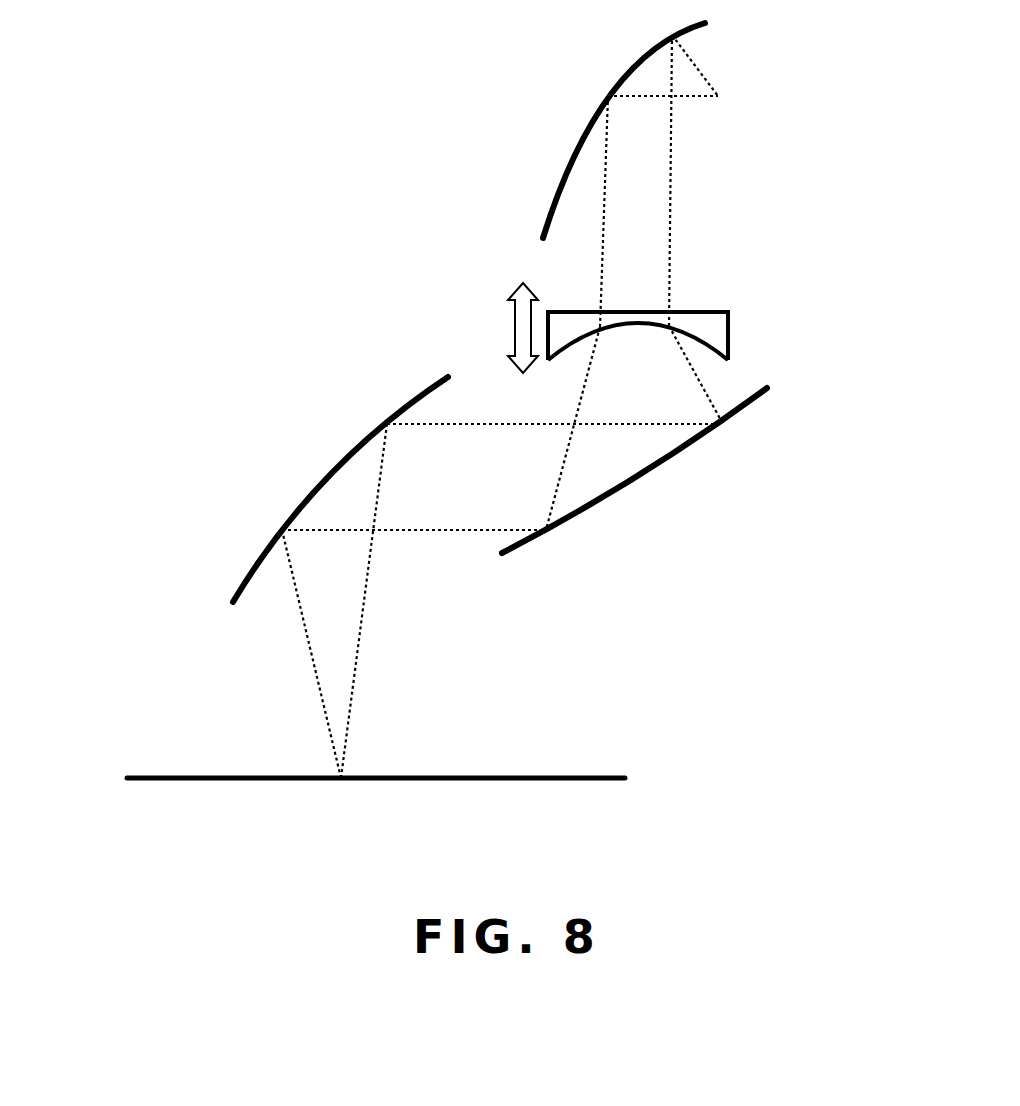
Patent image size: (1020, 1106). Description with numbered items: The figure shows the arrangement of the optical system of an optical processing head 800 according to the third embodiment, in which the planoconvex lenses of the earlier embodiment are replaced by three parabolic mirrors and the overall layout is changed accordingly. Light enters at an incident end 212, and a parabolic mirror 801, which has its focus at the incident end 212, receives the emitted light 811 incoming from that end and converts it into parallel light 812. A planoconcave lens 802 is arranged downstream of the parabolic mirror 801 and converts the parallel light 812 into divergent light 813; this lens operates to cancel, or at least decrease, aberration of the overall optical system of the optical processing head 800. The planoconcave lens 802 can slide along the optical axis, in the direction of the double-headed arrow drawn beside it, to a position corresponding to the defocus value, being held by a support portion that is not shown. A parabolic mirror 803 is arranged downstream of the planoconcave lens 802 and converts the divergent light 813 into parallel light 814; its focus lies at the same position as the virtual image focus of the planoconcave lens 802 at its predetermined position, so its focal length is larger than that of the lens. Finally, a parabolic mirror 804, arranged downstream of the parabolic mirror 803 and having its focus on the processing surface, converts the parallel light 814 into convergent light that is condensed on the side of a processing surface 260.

The optical processing head 800 is at (178, 147).
The parabolic mirror 801 is at (558, 190).
The planoconcave lens 802 is at (722, 323).
The parabolic mirror 803 is at (665, 473).
The parabolic mirror 804 is at (292, 502).
The emitted light 811 is at (695, 60).
The incident end 212 is at (722, 96).
The parallel light 812 is at (672, 165).
The divergent light 813 is at (700, 378).
The parallel light 814 is at (447, 532).
The processing surface 260 is at (518, 776).